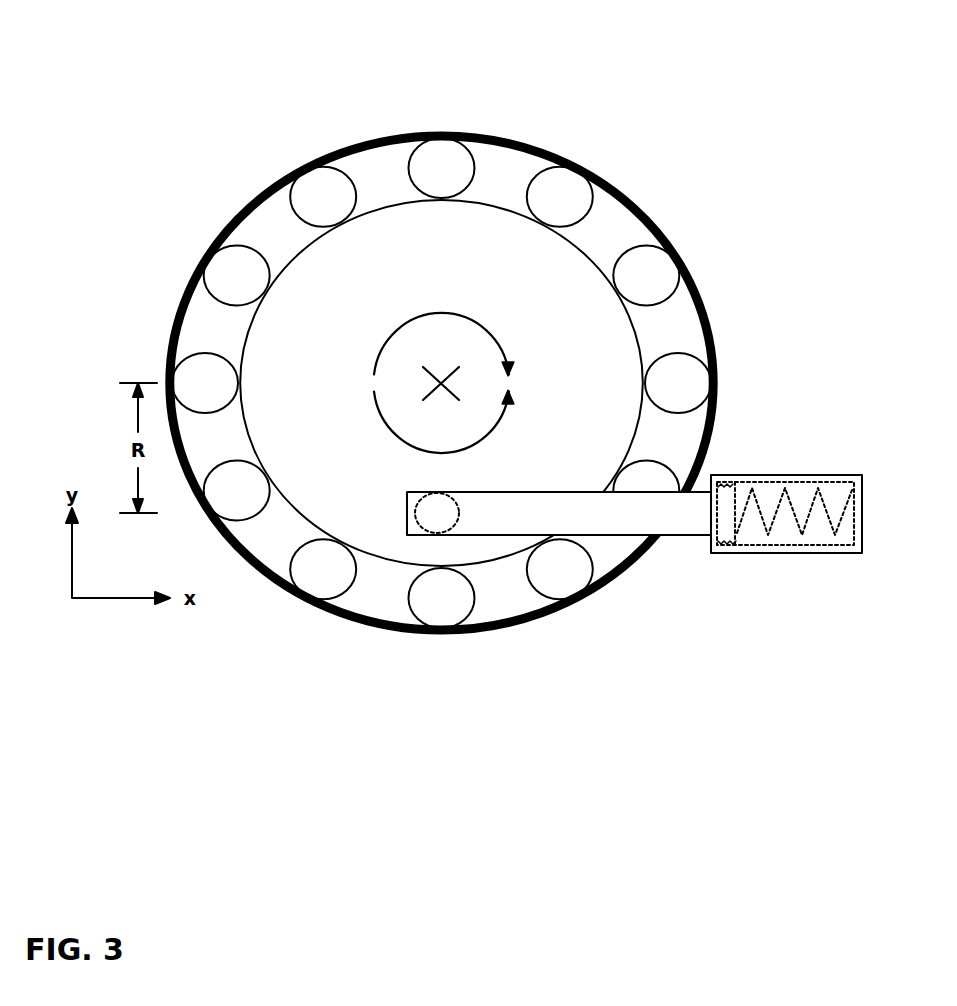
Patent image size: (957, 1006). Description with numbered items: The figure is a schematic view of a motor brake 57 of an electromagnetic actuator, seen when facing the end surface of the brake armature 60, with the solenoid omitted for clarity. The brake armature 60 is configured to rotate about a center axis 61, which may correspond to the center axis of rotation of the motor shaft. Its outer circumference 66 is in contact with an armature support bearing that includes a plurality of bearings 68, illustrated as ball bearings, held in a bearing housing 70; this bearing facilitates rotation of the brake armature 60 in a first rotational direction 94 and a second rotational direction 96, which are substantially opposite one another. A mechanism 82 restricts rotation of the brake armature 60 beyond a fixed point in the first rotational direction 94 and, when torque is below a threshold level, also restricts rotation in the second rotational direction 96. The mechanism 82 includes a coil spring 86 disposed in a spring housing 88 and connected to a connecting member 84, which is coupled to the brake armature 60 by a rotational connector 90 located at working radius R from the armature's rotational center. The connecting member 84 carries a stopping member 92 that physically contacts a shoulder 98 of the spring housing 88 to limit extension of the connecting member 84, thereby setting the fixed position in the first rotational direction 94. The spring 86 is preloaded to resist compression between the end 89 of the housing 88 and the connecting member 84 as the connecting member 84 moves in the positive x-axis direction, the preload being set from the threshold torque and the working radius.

The motor brake 57 is at (168, 58).
The brake armature 60 is at (305, 270).
The center axis 61 is at (443, 372).
The outer circumference 66 is at (348, 148).
The bearings 68 is at (455, 158).
The bearing housing 70 is at (648, 212).
The mechanism 82 is at (786, 414).
The connecting member 84 is at (658, 530).
The spring 86 is at (763, 530).
The spring housing 88 is at (828, 476).
The end 89 is at (852, 523).
The rotational connector 90 is at (454, 496).
The stopping member 92 is at (730, 492).
The first rotational direction 94 is at (483, 327).
The second rotational direction 96 is at (497, 420).
The shoulder 98 is at (714, 488).